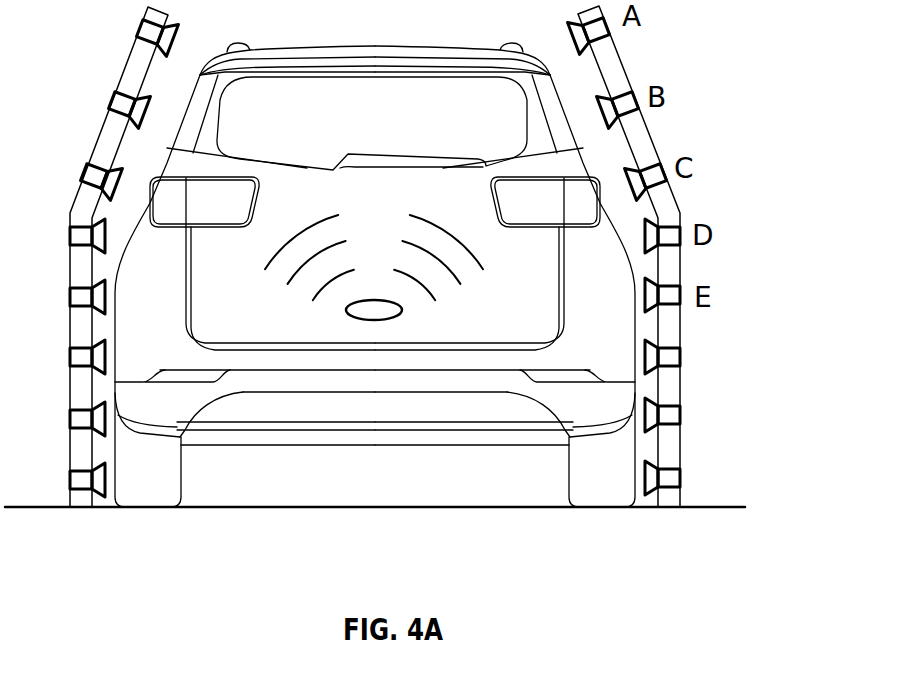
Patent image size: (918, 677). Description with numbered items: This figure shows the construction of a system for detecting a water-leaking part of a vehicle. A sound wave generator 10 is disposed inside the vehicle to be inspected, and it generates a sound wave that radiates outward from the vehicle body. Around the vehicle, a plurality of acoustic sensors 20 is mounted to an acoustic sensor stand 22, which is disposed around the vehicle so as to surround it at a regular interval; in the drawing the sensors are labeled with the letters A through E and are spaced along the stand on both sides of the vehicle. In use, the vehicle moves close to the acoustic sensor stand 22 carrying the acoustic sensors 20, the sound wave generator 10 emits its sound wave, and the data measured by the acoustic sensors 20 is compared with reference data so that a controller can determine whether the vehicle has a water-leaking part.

The sound wave generator 10 is at (375, 320).
The acoustic sensors 20 is at (613, 97).
The acoustic sensor stand 22 is at (645, 137).